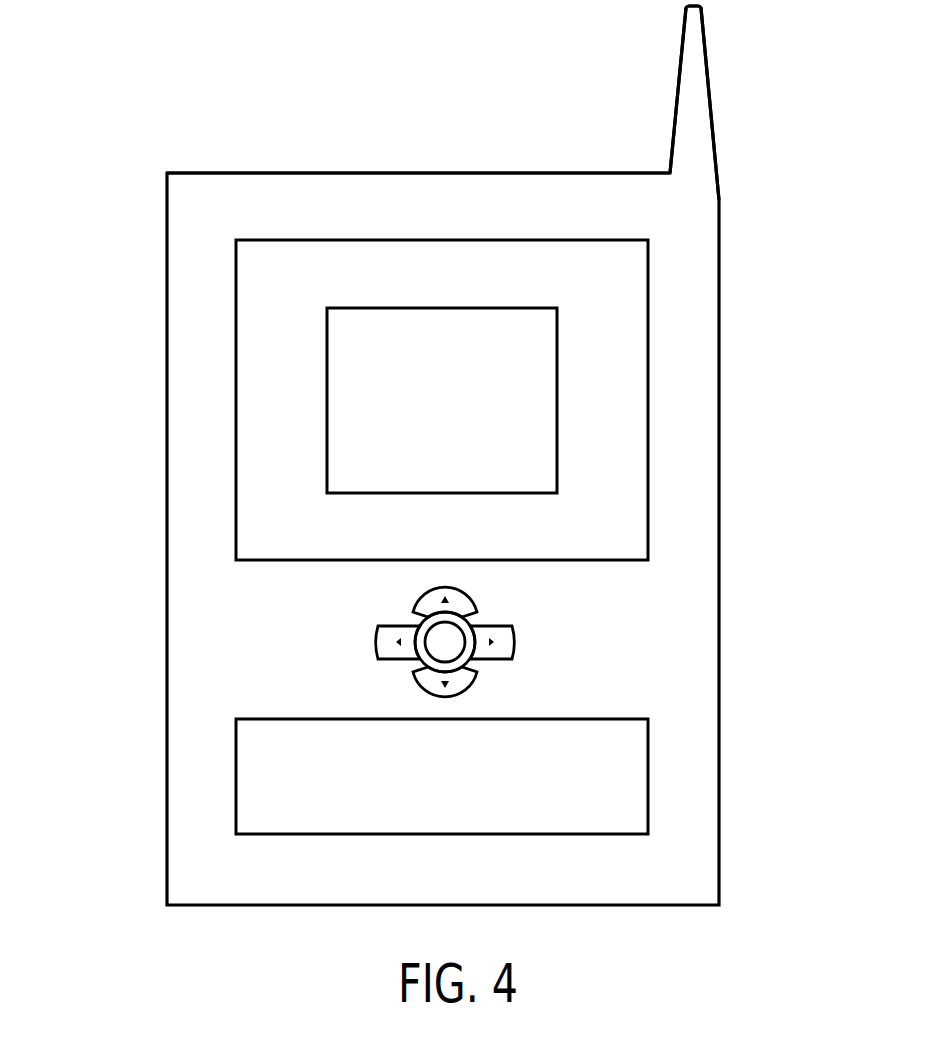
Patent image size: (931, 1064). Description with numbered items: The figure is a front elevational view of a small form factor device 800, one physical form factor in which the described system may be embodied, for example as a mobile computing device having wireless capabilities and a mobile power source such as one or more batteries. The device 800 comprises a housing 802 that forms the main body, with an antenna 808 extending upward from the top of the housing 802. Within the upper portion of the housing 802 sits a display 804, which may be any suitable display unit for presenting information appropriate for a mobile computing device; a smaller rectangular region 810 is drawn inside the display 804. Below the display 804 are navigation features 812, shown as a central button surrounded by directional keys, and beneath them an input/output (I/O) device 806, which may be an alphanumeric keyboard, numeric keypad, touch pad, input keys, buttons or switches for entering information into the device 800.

The small form factor device 800 is at (166, 106).
The housing 802 is at (167, 632).
The display 804 is at (648, 298).
The input/output (I/O) device 806 is at (648, 776).
The antenna 808 is at (678, 90).
The display window 810 is at (440, 308).
The navigation features 812 is at (552, 642).